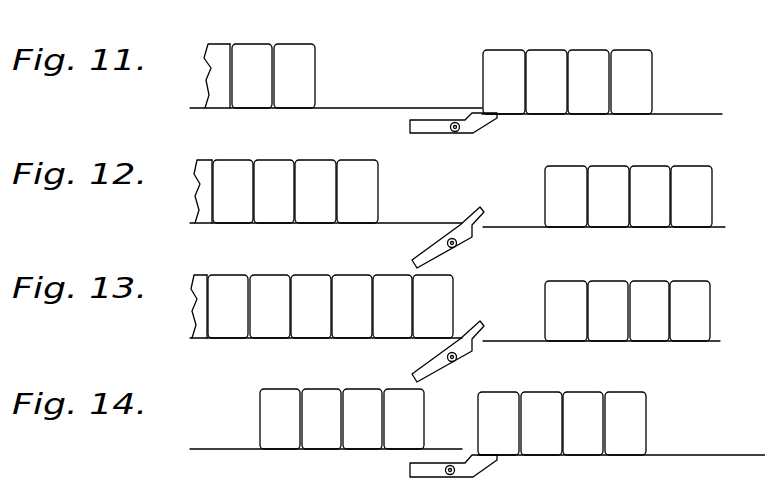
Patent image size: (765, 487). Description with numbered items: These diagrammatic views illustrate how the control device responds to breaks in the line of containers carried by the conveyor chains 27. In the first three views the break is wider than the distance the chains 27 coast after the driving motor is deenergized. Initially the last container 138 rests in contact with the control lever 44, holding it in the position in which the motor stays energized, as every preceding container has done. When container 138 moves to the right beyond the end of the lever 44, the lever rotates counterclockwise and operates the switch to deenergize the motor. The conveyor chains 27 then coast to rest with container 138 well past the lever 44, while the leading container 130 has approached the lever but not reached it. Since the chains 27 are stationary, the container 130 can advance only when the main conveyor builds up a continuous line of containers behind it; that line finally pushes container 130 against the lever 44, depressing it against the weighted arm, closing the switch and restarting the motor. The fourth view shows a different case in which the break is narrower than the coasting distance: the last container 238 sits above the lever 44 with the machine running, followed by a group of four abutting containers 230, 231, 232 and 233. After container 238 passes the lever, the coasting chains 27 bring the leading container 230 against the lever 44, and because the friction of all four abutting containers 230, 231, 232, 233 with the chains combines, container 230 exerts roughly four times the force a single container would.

In FIG. 11, the conveyor chains 27 is at (380, 93).
In FIG. 12, the conveyor chains 27 is at (391, 222).
In FIG. 13, the conveyor chains 27 is at (221, 336).
In FIG. 14, the conveyor chains 27 is at (210, 448).
In FIG. 11, the control lever 44 is at (472, 128).
In FIG. 12, the control lever 44 is at (472, 238).
In FIG. 13, the control lever 44 is at (472, 352).
In FIG. 14, the control lever 44 is at (472, 470).
In FIG. 11, the leading container 130 is at (305, 31).
In FIG. 12, the leading container 130 is at (362, 154).
In FIG. 13, the leading container 130 is at (446, 279).
In FIG. 11, the last container 138 is at (507, 52).
In FIG. 12, the last container 138 is at (572, 160).
In FIG. 13, the last container 138 is at (583, 272).
In FIG. 14, the leading container 230 is at (398, 393).
In FIG. 14, the container 231 is at (352, 393).
In FIG. 14, the container 232 is at (316, 375).
In FIG. 14, the container 233 is at (268, 409).
In FIG. 14, the last container 238 is at (500, 400).